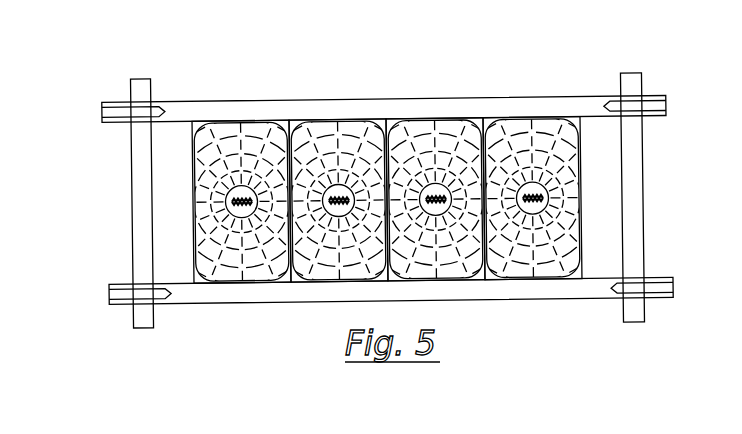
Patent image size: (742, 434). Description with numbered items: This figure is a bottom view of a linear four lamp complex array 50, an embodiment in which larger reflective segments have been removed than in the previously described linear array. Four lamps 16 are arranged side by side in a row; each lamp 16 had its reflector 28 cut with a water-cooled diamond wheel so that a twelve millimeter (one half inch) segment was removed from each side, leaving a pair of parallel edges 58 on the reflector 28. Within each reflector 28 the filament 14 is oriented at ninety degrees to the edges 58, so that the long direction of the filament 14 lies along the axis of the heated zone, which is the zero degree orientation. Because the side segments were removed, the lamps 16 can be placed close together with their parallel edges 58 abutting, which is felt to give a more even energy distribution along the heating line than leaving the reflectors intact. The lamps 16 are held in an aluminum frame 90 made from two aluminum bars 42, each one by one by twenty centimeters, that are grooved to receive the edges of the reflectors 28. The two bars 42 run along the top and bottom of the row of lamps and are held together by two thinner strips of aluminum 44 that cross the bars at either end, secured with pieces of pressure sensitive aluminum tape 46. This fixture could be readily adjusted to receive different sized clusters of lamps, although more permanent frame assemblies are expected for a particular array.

The aluminum frame 90 is at (395, 201).
The complex array 50 is at (395, 201).
The aluminum bars 42 is at (243, 107).
The thinner strips of aluminum 44 is at (140, 169).
The pressure sensitive aluminum tape 46 is at (117, 110).
The lamps 16 is at (410, 203).
The reflector 28 is at (467, 121).
The filament 14 is at (556, 198).
The parallel edges 58 is at (363, 120).